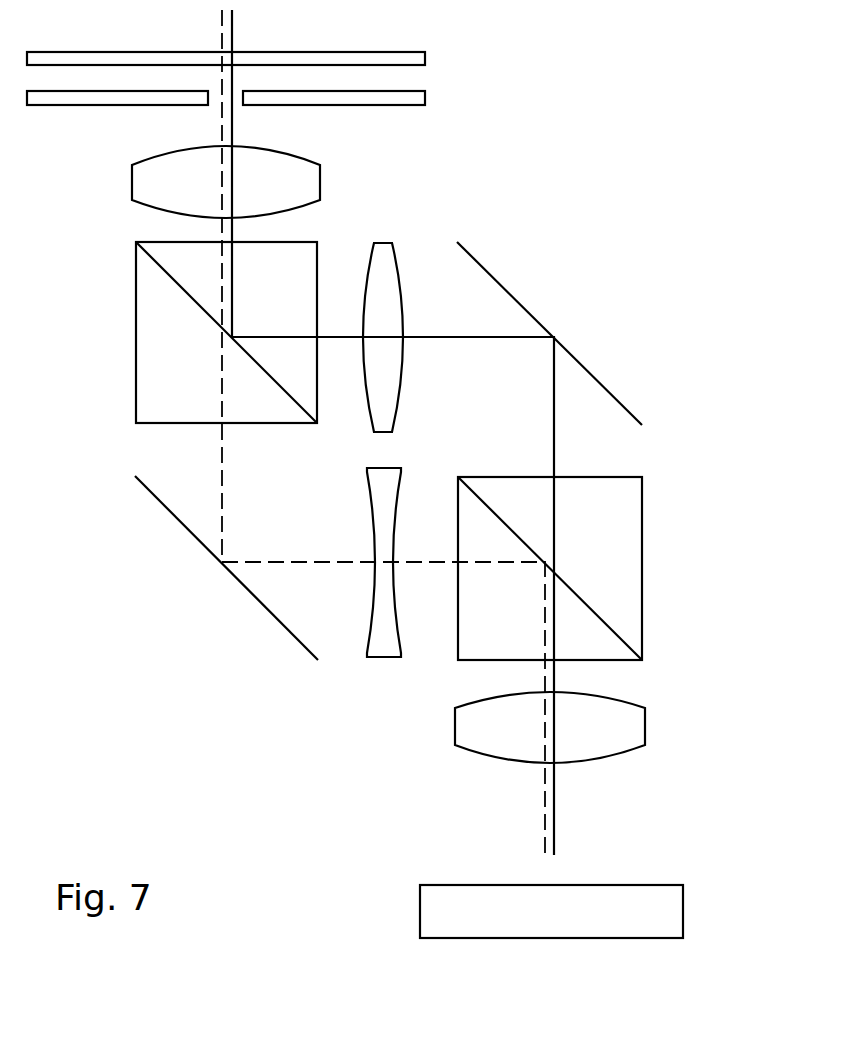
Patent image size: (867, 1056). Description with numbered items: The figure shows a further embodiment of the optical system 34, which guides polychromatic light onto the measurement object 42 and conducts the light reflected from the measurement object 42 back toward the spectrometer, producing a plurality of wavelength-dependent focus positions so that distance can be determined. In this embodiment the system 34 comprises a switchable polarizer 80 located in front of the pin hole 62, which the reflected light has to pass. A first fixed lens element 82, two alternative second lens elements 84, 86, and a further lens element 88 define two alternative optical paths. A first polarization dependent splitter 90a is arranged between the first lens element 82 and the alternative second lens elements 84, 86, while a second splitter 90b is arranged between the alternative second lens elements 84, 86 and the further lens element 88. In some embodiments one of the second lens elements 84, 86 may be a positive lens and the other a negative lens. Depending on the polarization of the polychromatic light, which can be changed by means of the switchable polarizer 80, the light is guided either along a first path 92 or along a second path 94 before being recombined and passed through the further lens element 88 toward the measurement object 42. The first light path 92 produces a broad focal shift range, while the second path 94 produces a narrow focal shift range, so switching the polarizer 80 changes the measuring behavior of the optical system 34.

The optical system 34 is at (630, 89).
The switchable polarizer 80 is at (425, 58).
The pin hole 62 is at (425, 96).
The first fixed lens element 82 is at (322, 181).
The first polarization dependent splitter 90a is at (136, 385).
The second lens element 84 is at (403, 378).
The second lens element 86 is at (384, 660).
The second splitter 90b is at (642, 507).
The further lens element 88 is at (645, 727).
The first path 92 is at (557, 815).
The second path 94 is at (545, 816).
The measurement object 42 is at (683, 908).